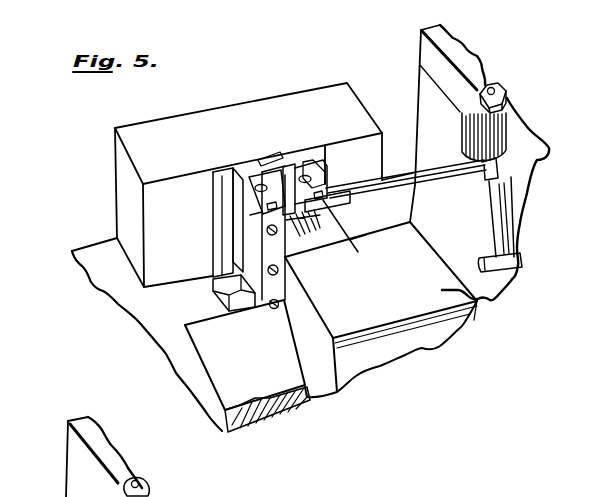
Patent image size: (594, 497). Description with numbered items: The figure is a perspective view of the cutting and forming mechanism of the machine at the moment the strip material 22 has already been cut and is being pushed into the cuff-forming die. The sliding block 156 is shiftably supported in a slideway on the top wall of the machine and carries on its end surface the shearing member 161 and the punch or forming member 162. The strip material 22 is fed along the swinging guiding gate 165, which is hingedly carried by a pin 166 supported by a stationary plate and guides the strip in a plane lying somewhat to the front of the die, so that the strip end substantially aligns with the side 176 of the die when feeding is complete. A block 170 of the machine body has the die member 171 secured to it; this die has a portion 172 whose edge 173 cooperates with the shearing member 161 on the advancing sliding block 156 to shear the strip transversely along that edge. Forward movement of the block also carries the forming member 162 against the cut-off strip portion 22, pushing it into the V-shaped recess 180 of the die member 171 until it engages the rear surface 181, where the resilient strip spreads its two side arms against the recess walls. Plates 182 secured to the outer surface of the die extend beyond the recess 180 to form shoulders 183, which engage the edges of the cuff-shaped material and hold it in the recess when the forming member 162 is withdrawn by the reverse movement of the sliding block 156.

The strip material 22 is at (313, 213).
The sliding block 156 is at (475, 298).
The shearing member 161 is at (367, 235).
The punch 162 is at (315, 246).
The guiding gate 165 is at (444, 168).
The pin 166 is at (500, 88).
The block 170 is at (255, 116).
The die member 171 is at (236, 171).
The portion 172 is at (320, 170).
The edge 173 is at (325, 178).
The side 176 is at (255, 258).
The V-shaped recess 180 is at (290, 176).
The rear surface 181 is at (282, 177).
The plates 182 is at (264, 226).
The shoulders 183 is at (278, 202).